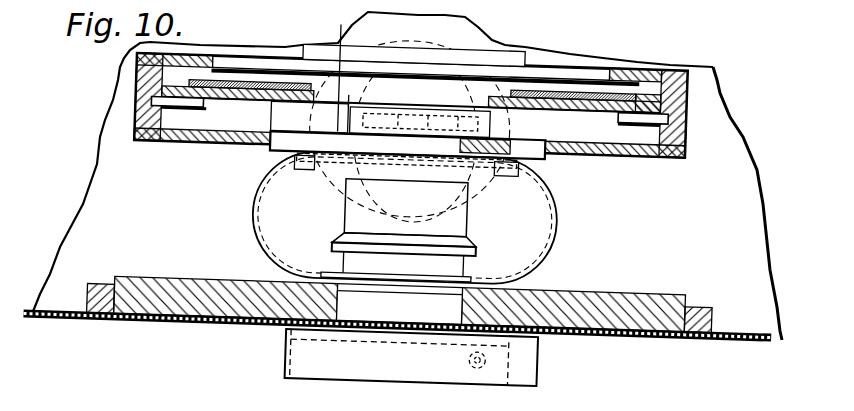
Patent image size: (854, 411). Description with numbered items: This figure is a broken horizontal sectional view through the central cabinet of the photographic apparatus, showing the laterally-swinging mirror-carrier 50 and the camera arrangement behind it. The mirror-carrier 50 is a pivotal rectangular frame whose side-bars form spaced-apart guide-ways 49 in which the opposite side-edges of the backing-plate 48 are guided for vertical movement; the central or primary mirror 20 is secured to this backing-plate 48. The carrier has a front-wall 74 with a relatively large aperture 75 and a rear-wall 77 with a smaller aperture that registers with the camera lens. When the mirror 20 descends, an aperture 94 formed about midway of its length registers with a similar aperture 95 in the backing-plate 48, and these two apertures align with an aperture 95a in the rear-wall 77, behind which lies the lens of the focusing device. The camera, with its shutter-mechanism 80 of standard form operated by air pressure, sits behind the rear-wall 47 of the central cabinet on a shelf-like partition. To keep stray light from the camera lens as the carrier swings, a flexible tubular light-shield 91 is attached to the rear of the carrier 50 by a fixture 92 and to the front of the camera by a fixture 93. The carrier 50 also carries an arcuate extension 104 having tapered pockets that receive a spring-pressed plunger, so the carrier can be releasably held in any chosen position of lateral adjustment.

The front-wall 74 is at (637, 57).
The aperture 75 is at (236, 52).
The arcuate extension 104 is at (487, 36).
The central or primary mirror 20 is at (266, 64).
The aperture 94 is at (339, 18).
The guide-ways 49 is at (157, 103).
The backing-plate 48 is at (230, 105).
The mirror-carrier 50 is at (169, 141).
The aperture 95 is at (339, 100).
The aperture 95a is at (518, 130).
The fixture 92 is at (530, 145).
The rear-wall 77 is at (650, 142).
The flexible tubular light-shield 91 is at (569, 222).
The fixture 93 is at (527, 264).
The shutter-mechanism 80 is at (529, 330).
The rear-wall 47 is at (643, 322).